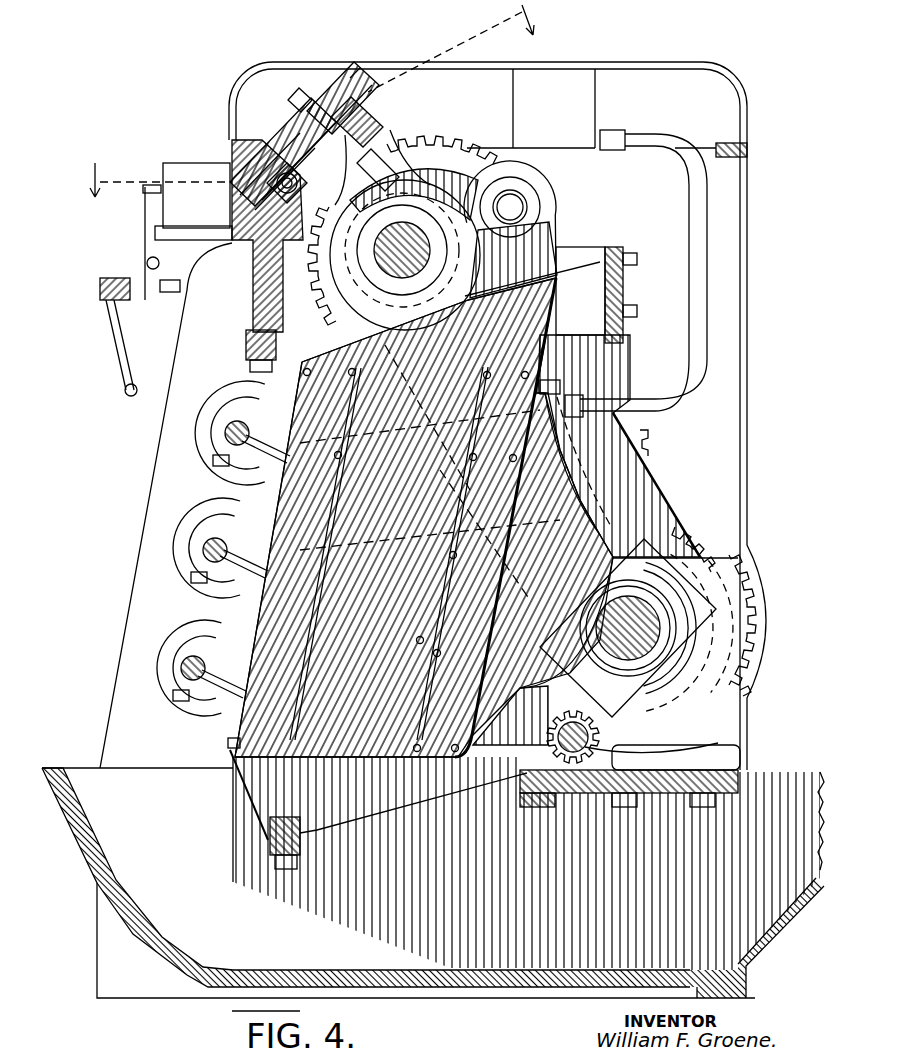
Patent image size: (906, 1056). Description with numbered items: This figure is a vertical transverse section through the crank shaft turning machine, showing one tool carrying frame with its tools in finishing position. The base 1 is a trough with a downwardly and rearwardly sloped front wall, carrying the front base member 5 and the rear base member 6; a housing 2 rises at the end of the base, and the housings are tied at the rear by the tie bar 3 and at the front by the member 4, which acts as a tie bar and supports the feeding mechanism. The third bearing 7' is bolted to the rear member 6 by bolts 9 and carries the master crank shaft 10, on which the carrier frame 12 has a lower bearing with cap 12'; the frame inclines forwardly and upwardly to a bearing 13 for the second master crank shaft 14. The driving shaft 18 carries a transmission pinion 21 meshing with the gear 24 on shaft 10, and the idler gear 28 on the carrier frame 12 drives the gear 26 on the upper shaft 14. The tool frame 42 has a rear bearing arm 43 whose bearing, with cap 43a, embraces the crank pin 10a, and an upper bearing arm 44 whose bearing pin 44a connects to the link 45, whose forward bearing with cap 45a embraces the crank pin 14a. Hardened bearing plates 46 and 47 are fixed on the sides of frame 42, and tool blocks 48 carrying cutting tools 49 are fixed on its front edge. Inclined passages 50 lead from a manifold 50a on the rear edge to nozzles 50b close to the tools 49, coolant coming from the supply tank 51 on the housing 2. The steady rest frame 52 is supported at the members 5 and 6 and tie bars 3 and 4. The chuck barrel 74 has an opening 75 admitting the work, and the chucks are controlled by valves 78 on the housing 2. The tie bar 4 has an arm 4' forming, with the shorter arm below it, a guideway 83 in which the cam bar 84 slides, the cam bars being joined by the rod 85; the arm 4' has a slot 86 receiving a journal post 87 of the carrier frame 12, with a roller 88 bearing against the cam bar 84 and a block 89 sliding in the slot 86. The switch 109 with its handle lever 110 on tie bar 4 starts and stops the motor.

The base 1 is at (110, 924).
The housing 2 is at (125, 630).
The tie bar 3 is at (625, 290).
The front upper tie bar 4 is at (242, 234).
The upper guideway forming arm 4' is at (398, 100).
The front base member 5 is at (292, 870).
The rear base member 6 is at (628, 782).
The third bearing 7' is at (767, 705).
The bolt 9 is at (745, 770).
The master crank shaft 10 is at (688, 670).
The crank pin 10a is at (685, 637).
The carrier frame 12 is at (605, 540).
The cap 12' is at (770, 627).
The bearing 13 is at (548, 282).
The second master crank shaft 14 is at (440, 205).
The crank pin 14a is at (430, 270).
The machine driving shaft 18 is at (632, 748).
The transmission pinion 21 is at (600, 740).
The gear 24 is at (771, 620).
The gear 26 is at (497, 416).
The idler gear 28 is at (645, 422).
The tool frame 42 is at (228, 742).
The rear bearing arm 43 is at (570, 690).
The cap 43a is at (655, 582).
The upper bearing arm 44 is at (555, 248).
The bearing pin 44a is at (512, 206).
The link 45 is at (497, 183).
The cap 45a is at (345, 305).
The bearing plate 46 is at (235, 770).
The bearing plate 47 is at (558, 322).
The tool block 48 is at (232, 497).
The cutting tool 49 is at (212, 458).
The passage 50 is at (380, 608).
The manifold 50a is at (580, 457).
The nozzle 50b is at (229, 543).
The supply tank 51 is at (597, 108).
The steady rest frame 52 is at (247, 355).
The barrel 74 is at (212, 420).
The opening 75 is at (178, 555).
The valve 78 is at (118, 312).
The guideway 83 is at (282, 150).
The cam bar 84 is at (350, 168).
The rod 85 is at (253, 258).
The slot 86 is at (290, 116).
The journal post 87 is at (322, 88).
The roller 88 is at (372, 115).
The block 89 is at (352, 75).
The switch 109 is at (172, 170).
The handle lever 110 is at (143, 262).